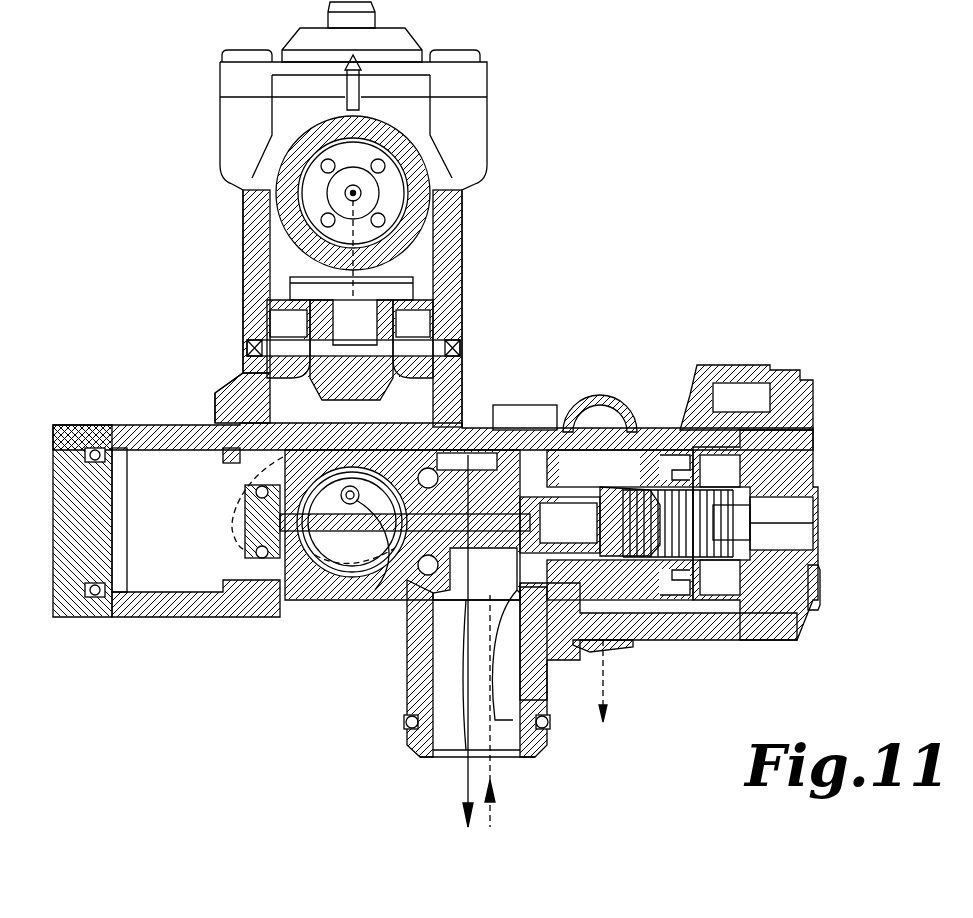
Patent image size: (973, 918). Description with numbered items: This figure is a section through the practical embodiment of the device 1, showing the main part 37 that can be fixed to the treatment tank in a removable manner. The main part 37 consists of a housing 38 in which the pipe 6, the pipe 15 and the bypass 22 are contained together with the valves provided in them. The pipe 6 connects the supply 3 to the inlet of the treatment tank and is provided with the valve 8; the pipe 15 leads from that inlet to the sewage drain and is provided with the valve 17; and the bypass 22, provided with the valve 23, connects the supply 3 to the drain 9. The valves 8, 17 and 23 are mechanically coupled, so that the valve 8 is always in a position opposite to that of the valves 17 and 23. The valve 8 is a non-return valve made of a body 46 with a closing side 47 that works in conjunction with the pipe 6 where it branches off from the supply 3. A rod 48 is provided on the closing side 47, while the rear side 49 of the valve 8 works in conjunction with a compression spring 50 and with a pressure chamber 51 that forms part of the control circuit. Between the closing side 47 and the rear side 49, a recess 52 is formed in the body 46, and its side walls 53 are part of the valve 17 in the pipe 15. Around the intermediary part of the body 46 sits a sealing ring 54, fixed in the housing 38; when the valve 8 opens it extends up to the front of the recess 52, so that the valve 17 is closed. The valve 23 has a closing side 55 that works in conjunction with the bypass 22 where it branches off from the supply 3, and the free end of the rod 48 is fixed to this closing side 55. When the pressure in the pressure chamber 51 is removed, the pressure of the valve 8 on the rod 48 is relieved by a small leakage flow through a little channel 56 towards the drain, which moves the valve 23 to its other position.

The device 1 is at (793, 155).
The main part 37 is at (708, 177).
The drain 9 is at (387, 188).
The housing 38 is at (455, 258).
The bypass 22 is at (250, 350).
The valve 8 is at (485, 495).
The sealing ring 54 is at (580, 455).
The side walls 53 is at (590, 455).
The recess 52 is at (603, 440).
The valve 17 is at (692, 380).
The pressure chamber 51 is at (745, 462).
The compression spring 50 is at (700, 523).
The rear side 49 is at (705, 575).
The little channel 56 is at (657, 635).
The pipe 15 is at (590, 645).
The body 46 is at (545, 600).
The pipe 6 is at (458, 720).
The closing side 47 is at (405, 612).
The rod 48 is at (365, 600).
The supply 3 is at (335, 590).
The closing side 55 is at (278, 612).
The valve 23 is at (255, 605).